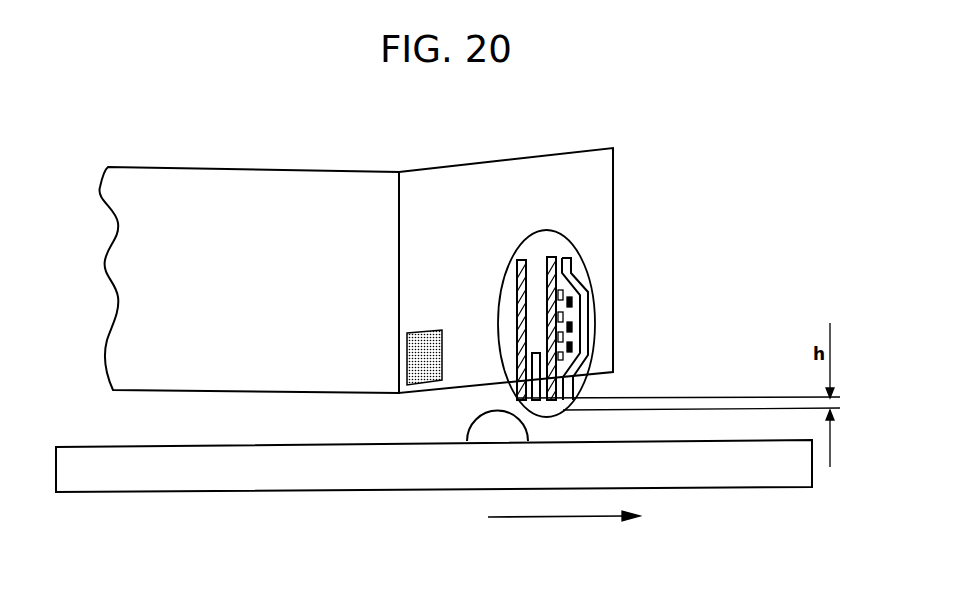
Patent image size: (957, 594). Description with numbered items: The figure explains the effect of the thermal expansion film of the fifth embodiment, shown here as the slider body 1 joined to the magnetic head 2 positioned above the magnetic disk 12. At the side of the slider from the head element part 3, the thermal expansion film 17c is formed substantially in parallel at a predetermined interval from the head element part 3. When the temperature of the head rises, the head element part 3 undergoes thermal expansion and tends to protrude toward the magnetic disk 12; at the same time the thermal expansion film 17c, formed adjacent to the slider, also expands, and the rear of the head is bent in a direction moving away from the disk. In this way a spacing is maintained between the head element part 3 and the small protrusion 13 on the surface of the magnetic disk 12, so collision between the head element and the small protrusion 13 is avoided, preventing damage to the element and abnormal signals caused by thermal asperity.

The print head body 1 is at (178, 215).
The magnetic head 2 is at (425, 212).
The head element part 3 is at (547, 229).
The thermal expansion film 17c is at (423, 333).
The magnetic disk 12 is at (338, 478).
The small protrusion 13 is at (495, 432).